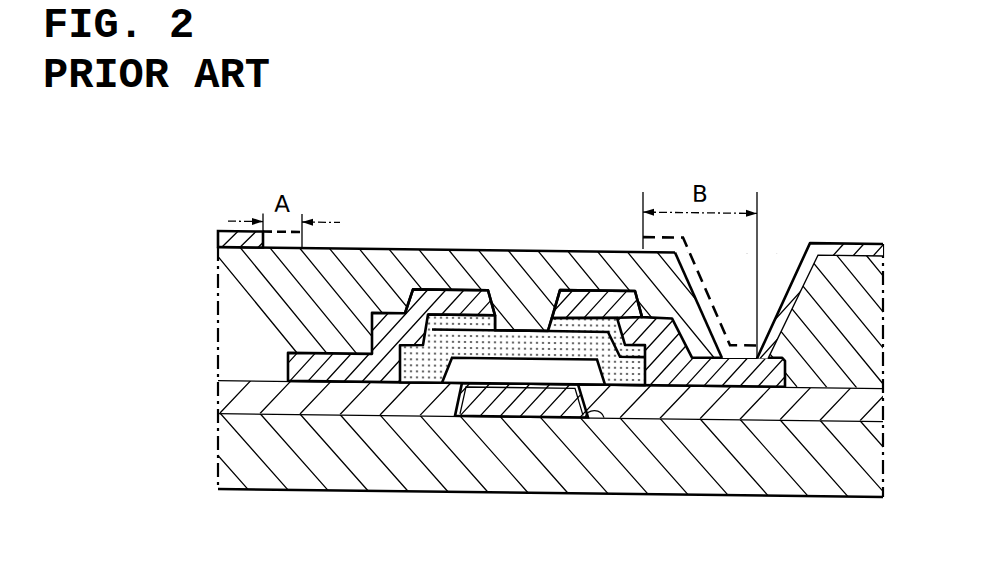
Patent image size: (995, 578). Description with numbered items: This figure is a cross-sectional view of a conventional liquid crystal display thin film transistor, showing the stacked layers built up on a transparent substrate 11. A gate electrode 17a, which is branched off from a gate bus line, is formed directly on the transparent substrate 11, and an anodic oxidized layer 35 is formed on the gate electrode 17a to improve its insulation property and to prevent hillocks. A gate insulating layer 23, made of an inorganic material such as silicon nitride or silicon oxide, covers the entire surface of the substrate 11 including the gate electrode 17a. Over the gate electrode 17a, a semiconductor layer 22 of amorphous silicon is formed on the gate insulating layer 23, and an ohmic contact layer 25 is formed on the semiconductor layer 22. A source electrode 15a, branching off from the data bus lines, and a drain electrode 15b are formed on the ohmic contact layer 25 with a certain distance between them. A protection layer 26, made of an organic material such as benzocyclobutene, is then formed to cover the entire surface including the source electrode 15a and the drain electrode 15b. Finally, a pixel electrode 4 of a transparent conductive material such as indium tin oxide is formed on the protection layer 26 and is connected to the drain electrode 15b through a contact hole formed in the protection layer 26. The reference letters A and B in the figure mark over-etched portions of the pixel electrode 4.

The pixel electrode 4 is at (850, 237).
The transparent substrate 11 is at (752, 477).
The source electrode 15a is at (467, 297).
The drain electrode 15b is at (580, 296).
The gate electrode 17a is at (522, 399).
The semiconductor layer 22 is at (422, 364).
The gate insulating layer 23 is at (683, 397).
The ohmic contact layer 25 is at (420, 288).
The protection layer 26 is at (835, 350).
The anodic oxidized layer 35 is at (603, 412).